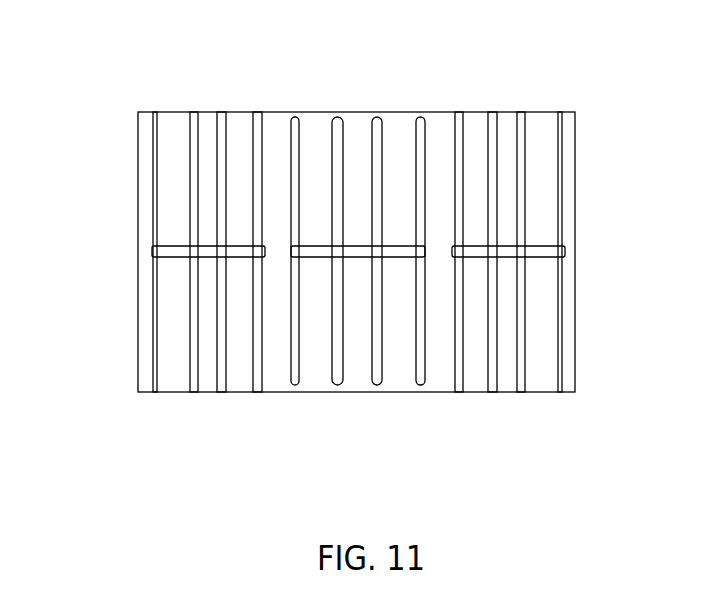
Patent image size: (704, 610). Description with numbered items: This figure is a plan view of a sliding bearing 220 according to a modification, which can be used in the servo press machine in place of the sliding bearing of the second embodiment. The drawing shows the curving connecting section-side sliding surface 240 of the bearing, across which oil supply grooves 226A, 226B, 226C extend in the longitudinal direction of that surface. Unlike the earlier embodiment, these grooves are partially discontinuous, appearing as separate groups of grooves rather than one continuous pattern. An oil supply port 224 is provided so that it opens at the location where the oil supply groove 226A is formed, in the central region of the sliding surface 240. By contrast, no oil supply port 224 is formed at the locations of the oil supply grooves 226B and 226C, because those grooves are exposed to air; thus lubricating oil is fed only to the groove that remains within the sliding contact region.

The sliding bearing 220 is at (170, 103).
The oil supply port 224 is at (333, 247).
The curving connecting section-side sliding surface 240 is at (360, 137).
The oil supply groove 226A is at (292, 394).
The oil supply groove 226B is at (160, 250).
The oil supply groove 226C is at (525, 241).